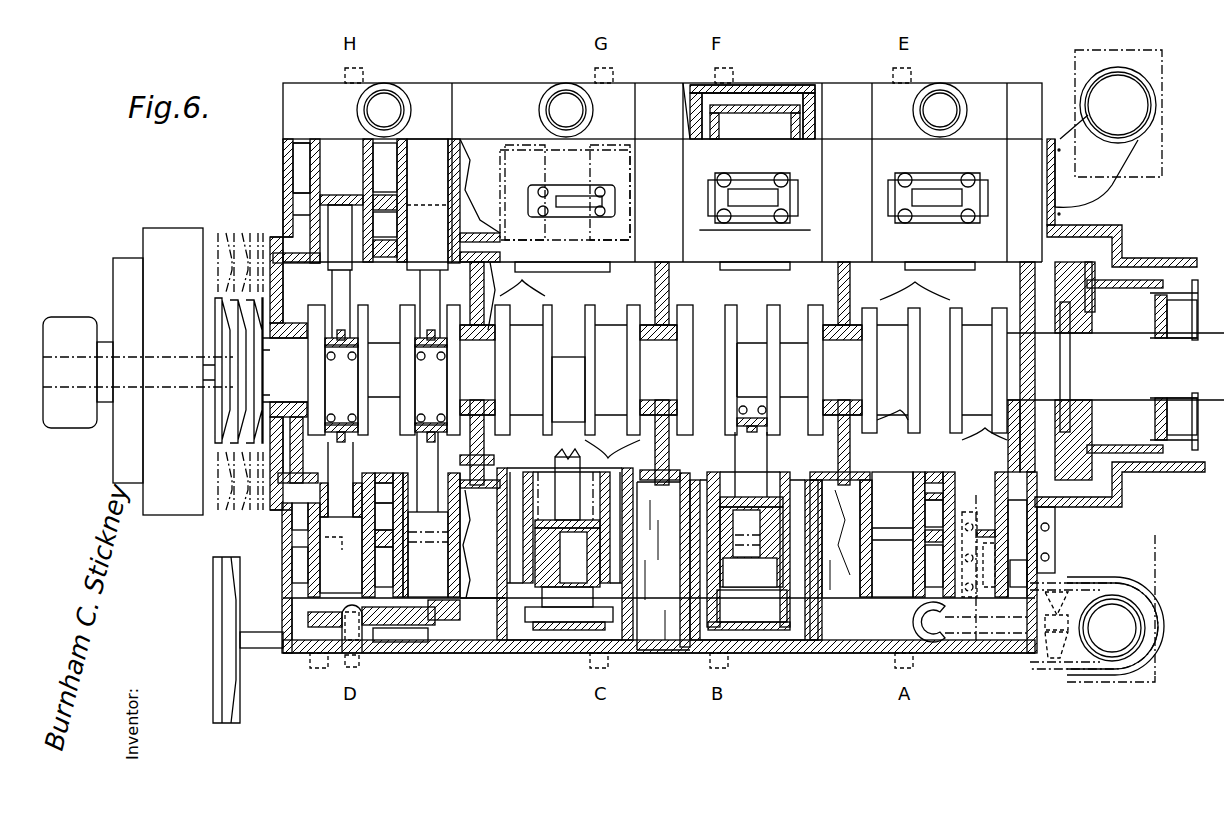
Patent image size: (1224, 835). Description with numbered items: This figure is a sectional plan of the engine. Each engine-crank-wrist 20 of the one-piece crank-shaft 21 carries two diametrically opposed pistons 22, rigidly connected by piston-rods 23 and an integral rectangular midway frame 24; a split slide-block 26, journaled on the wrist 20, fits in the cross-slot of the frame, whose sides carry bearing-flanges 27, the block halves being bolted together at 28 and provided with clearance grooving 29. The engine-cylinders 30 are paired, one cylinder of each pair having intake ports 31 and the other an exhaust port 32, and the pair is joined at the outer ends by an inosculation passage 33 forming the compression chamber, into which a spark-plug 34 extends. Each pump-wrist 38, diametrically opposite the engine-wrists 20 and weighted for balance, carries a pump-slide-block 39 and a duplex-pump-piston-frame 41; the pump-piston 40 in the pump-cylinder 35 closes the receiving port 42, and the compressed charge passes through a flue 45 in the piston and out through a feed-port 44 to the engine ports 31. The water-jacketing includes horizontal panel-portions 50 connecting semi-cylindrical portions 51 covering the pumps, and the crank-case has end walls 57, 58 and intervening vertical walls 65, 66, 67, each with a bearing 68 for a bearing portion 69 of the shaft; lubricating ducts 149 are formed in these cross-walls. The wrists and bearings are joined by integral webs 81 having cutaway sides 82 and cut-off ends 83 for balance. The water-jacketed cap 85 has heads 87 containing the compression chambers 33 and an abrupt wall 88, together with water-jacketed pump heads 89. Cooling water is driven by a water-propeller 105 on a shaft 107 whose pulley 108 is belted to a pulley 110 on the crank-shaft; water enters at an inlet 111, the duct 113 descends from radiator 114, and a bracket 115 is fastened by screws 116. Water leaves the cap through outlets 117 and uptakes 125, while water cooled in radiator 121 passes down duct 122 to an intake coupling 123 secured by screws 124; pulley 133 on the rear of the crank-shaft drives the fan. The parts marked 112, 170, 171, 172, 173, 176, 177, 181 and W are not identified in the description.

The engine-crank-wrist 20 is at (657, 370).
The crank-shaft 21 is at (743, 367).
The piston 22 is at (545, 168).
The piston-rod 23 is at (462, 399).
The midway frame 24 is at (428, 330).
The split slide-block 26 is at (326, 356).
The bearing-flange 27 is at (358, 340).
The bolts 28 is at (356, 358).
The clearance grooving 29 is at (326, 422).
The engine-cylinder 30 is at (318, 150).
The intake port 31 is at (326, 540).
The exhaust port 32 is at (440, 204).
The inosculation passage 33 is at (363, 634).
The spark-plug 34 is at (363, 75).
The pump-cylinder 35 is at (612, 275).
The pump-wrist 38 is at (656, 382).
The pump-slide-block 39 is at (752, 399).
The pump-piston 40 is at (593, 248).
The duplex-pump-piston-frame 41 is at (768, 421).
The intake port 42 is at (570, 204).
The feed-port 44 is at (751, 469).
The flue 45 is at (745, 557).
The panel-portion 50 is at (746, 411).
The semi-cylindrical water-jacketing portion 51 is at (824, 239).
The end wall 57 is at (283, 282).
The end wall 58 is at (1025, 296).
The vertical wall 65 is at (484, 282).
The vertical wall 66 is at (669, 288).
The vertical wall 67 is at (850, 284).
The bearing 68 is at (661, 370).
The bearing portion 69 is at (660, 371).
The web 81 is at (942, 425).
The cutaway side 82 is at (570, 368).
The cut-off web end 83 is at (915, 290).
The water-jacketed cap 85 is at (516, 70).
The head 87 is at (460, 614).
The abrupt wall 88 is at (432, 609).
The water-jacketed pump head 89 is at (792, 112).
The water-propeller 105 is at (1069, 609).
The pump-shaft 107 is at (667, 648).
The pulley 108 is at (240, 596).
The pulley 110 is at (226, 300).
The inlet 111 is at (1016, 534).
The housing 112 is at (1100, 582).
The water-duct 113 is at (1140, 614).
The radiator 114 is at (1156, 556).
The bracket 115 is at (1070, 551).
The screws 116 is at (978, 530).
The outlet 117 is at (915, 618).
The radiator 121 is at (1115, 58).
The duct 122 is at (1100, 136).
The intake coupling 123 is at (1108, 186).
The screws 124 is at (1062, 166).
The uptake 125 is at (404, 108).
The pulley 133 is at (252, 325).
The lubricating duct 149 is at (292, 456).
The shaft axis 170 is at (158, 362).
The flywheel 171 is at (150, 371).
The hub 172 is at (70, 430).
The shaft 173 is at (1070, 366).
The flange 176 is at (1155, 316).
The flange 177 is at (1155, 396).
The bracket 181 is at (1165, 258).
The water jacket W is at (705, 372).